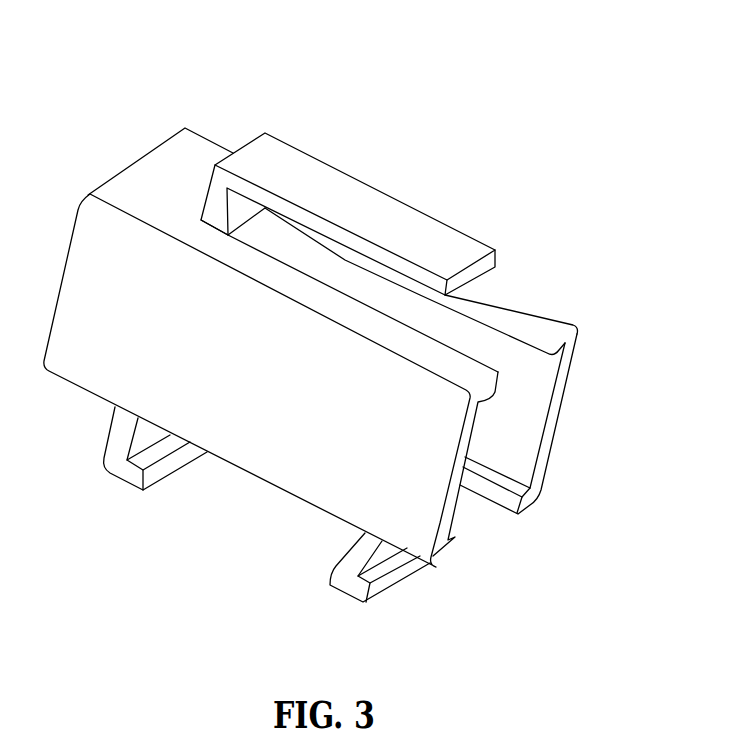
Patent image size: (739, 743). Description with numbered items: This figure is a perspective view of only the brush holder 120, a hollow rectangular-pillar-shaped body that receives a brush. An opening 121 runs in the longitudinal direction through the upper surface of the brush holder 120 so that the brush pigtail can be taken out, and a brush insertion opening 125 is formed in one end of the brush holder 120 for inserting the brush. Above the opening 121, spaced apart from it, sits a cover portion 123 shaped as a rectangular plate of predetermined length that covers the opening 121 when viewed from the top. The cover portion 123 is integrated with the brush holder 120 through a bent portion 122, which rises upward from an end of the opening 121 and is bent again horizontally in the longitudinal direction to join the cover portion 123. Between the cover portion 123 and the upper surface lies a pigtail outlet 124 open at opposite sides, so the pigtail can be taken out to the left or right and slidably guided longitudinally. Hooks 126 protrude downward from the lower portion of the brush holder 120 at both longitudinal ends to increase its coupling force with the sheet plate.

The brush holder 120 is at (140, 101).
The opening 121 is at (512, 328).
The bent portion 122 is at (213, 200).
The cover portion 123 is at (313, 178).
The pigtail outlet 124 is at (340, 273).
The brush insertion opening 125 is at (540, 418).
The hooks 126 is at (394, 570).